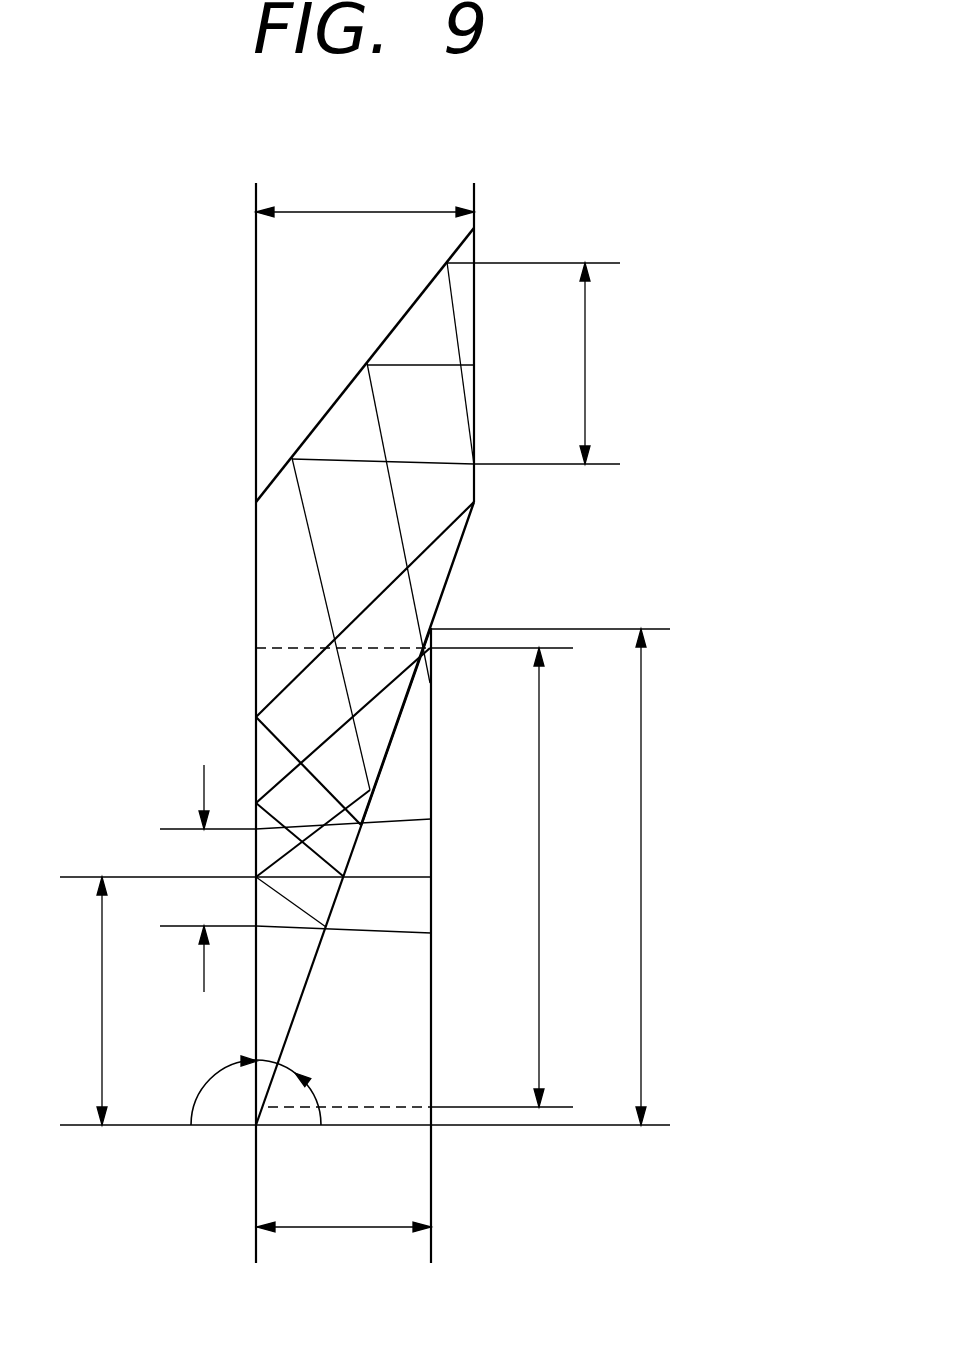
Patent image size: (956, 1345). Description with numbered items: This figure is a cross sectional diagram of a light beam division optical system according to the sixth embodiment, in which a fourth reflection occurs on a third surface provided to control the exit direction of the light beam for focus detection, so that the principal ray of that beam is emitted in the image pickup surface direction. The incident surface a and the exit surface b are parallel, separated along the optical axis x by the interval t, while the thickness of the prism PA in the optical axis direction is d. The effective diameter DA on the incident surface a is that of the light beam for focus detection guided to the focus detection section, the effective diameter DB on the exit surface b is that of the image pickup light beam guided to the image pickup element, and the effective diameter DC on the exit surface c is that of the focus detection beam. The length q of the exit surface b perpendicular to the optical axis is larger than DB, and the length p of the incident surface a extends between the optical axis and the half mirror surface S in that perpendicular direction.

The thickness of the prism PA d is at (365, 191).
The interval between the incident surface and the exit surface t is at (344, 1204).
The length of the incident surface p is at (245, 1001).
The length of the exit surface q is at (550, 877).
The effective diameter on the incident surface of the focus detection light beam DA is at (194, 878).
The effective diameter on the exit surface of the image pickup light beam DB is at (502, 877).
The effective diameter on the exit surface c of the focus detection light beam DC is at (533, 363).